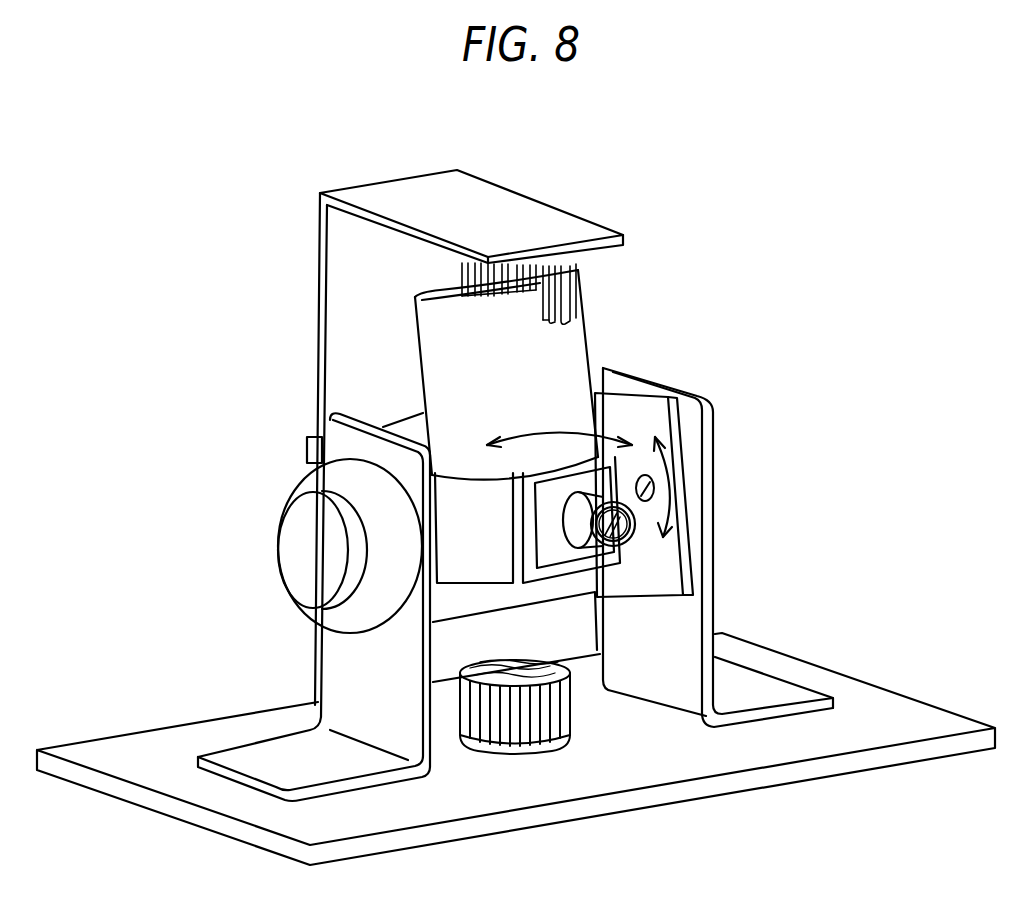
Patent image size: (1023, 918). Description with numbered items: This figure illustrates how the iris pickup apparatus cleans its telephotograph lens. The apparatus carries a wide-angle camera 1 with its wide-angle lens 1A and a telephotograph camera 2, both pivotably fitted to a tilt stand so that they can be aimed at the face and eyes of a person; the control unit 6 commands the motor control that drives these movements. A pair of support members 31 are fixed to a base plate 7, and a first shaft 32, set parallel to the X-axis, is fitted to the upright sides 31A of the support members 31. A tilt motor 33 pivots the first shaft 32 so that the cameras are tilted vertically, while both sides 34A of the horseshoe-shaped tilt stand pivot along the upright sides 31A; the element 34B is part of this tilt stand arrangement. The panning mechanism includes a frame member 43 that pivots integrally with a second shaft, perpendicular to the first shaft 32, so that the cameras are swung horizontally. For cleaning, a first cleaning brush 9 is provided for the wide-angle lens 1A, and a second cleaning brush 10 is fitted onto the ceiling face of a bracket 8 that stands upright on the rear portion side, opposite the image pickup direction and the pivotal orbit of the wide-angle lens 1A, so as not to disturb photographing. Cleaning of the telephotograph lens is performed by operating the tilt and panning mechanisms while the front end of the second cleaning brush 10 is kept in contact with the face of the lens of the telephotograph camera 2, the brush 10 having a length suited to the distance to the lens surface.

The wide-angle camera 1 is at (590, 543).
The wide-angle lens 1A is at (630, 535).
The telephotograph camera 2 is at (578, 333).
The control unit 6 is at (268, 755).
The base plate 7 is at (918, 722).
The bracket 8 is at (528, 207).
The first cleaning brush 9 is at (482, 745).
The second cleaning brush 10 is at (579, 257).
The support members 31 is at (792, 697).
The upright sides 31A is at (648, 690).
The first shaft 32 is at (660, 483).
The tilt motor 33 is at (295, 543).
The sides of the tilt stand 34A is at (313, 455).
The tilt frame 34B is at (400, 430).
The frame member 43 is at (463, 565).